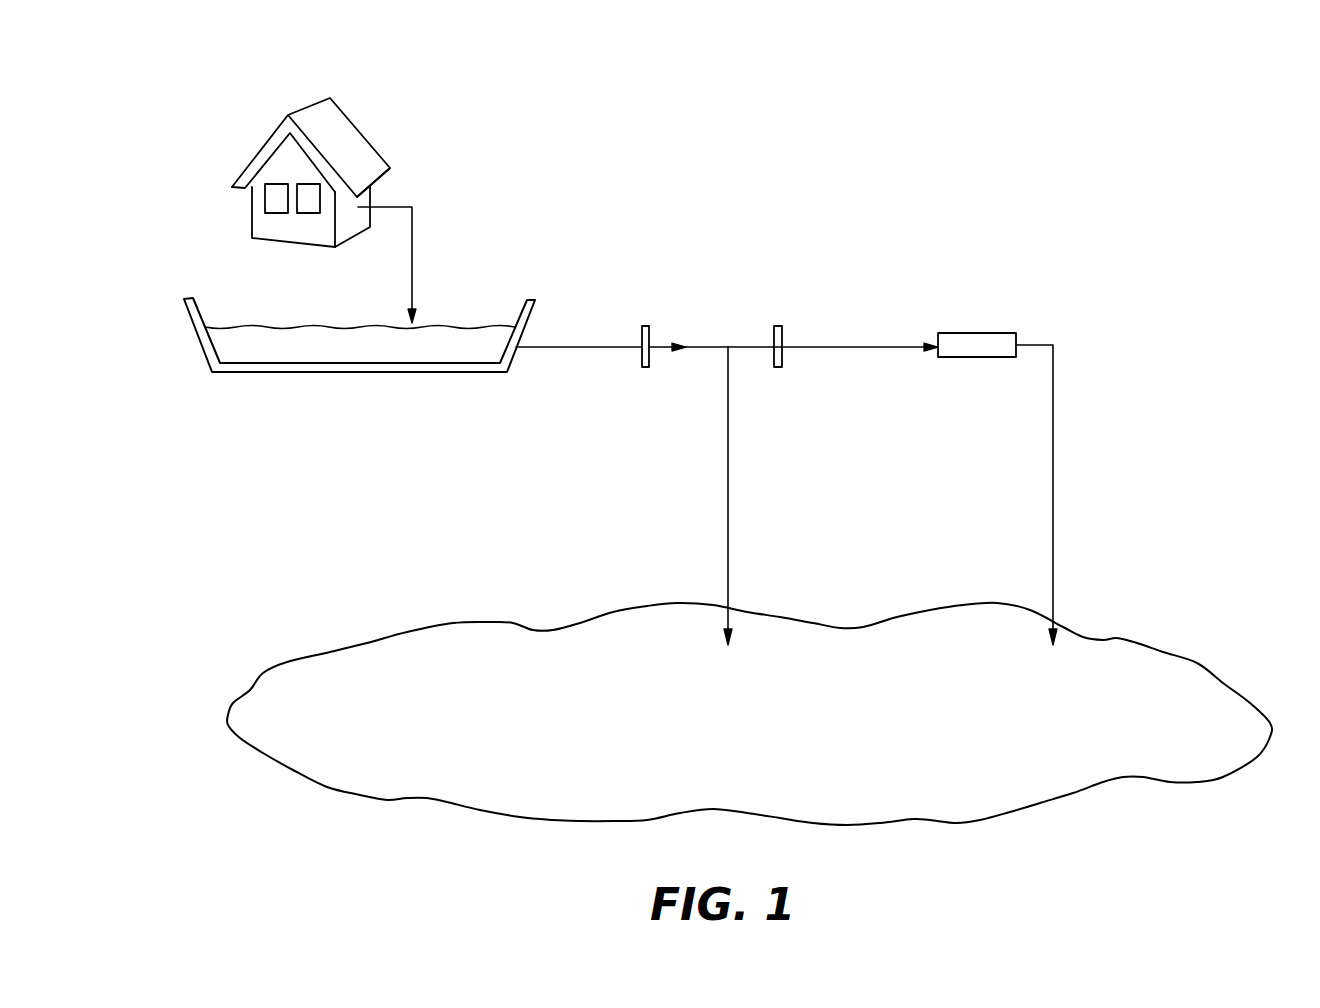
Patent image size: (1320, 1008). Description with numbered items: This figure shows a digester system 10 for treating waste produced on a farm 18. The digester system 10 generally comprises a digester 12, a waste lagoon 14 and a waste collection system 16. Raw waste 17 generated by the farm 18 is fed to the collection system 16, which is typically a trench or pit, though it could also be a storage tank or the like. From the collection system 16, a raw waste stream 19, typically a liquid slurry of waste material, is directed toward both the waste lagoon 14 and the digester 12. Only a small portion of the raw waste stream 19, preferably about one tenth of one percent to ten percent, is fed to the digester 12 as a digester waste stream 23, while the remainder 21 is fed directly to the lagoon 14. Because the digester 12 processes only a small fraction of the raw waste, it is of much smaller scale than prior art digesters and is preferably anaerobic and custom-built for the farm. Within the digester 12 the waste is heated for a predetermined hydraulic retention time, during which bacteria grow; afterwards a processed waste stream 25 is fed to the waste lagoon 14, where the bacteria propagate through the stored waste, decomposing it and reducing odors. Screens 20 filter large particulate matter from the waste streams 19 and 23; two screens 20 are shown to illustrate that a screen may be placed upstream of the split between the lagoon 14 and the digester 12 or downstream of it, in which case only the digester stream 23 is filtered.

The digester system 10 is at (1025, 117).
The digester 12 is at (967, 338).
The waste lagoon 14 is at (967, 622).
The waste collection system 16 is at (442, 335).
The raw waste 17 is at (488, 323).
The farm 18 is at (368, 153).
The raw waste stream 19 is at (583, 345).
The screens 20 is at (643, 327).
The remainder 21 is at (728, 442).
The digester waste stream 23 is at (837, 345).
The processed waste stream 25 is at (1052, 441).